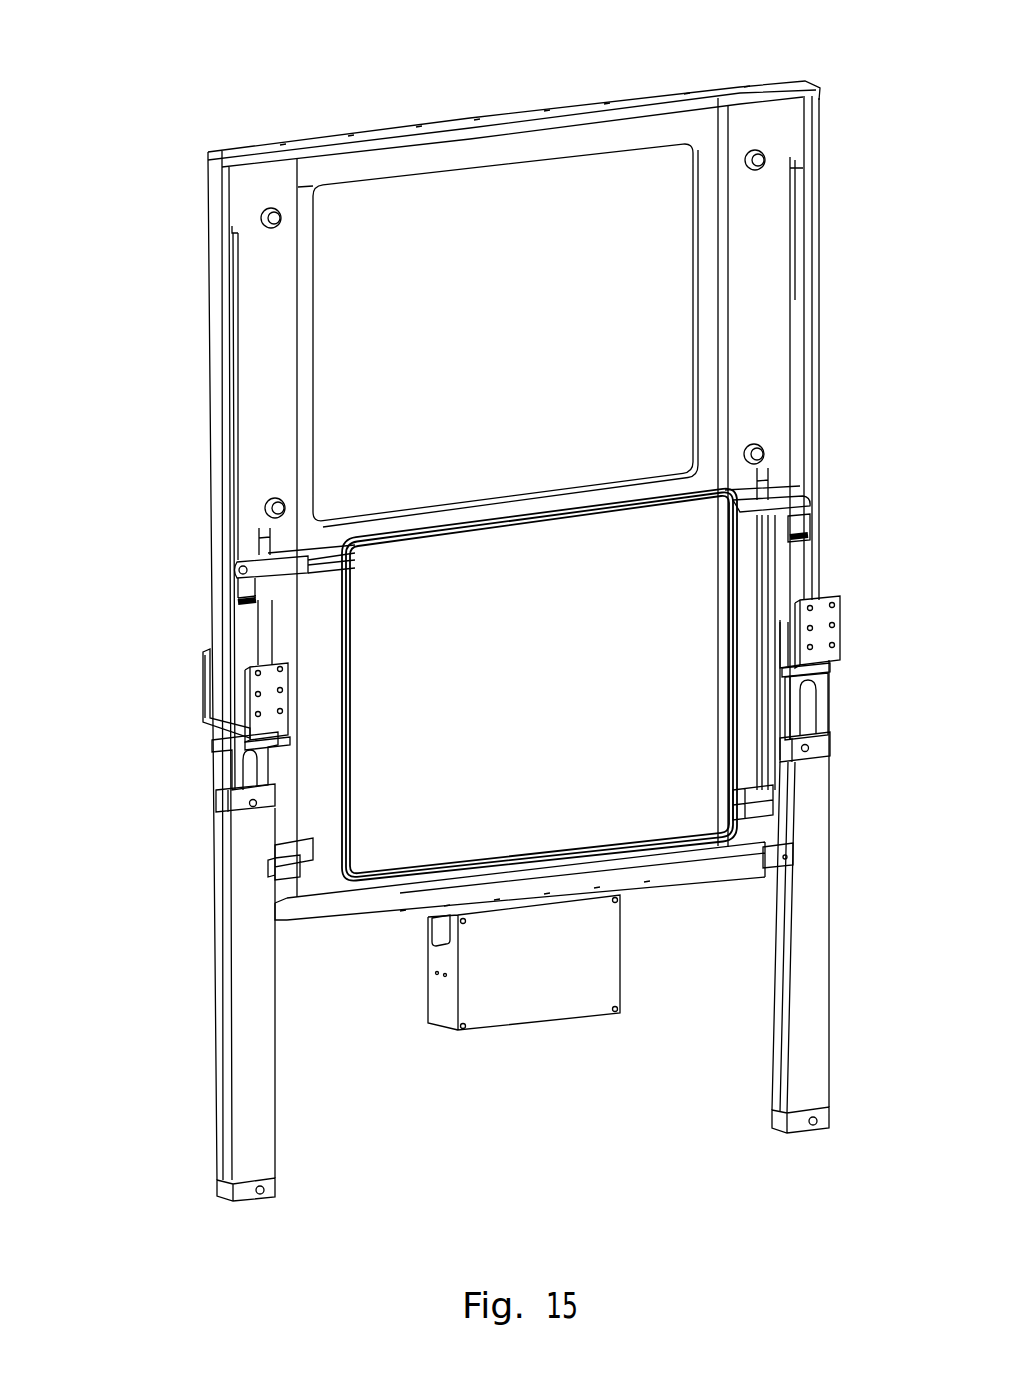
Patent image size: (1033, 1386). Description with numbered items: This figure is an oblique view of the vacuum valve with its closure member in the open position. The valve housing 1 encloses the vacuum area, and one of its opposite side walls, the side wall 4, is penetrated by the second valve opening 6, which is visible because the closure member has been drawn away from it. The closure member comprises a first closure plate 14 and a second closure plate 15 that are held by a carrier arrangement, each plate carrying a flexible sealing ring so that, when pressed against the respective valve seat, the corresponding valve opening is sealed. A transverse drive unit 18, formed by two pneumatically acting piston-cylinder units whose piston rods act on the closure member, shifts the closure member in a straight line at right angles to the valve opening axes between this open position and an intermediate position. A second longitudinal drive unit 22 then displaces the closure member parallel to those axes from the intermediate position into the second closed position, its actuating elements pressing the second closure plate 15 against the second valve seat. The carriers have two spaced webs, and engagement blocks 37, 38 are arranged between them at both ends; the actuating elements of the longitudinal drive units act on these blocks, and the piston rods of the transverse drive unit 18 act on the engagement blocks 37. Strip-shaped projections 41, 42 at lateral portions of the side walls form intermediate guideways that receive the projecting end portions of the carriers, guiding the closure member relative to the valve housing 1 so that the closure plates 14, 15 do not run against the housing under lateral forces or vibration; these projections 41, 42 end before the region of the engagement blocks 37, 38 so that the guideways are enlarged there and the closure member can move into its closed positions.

The valve housing 1 is at (529, 103).
The side wall 4 is at (706, 125).
The second valve opening 6 is at (653, 243).
The first closure plate 14 is at (790, 858).
The second closure plate 15 is at (660, 508).
The transverse drive unit 18 is at (763, 980).
The second longitudinal drive unit 22 is at (740, 452).
The engagement block 37 is at (247, 563).
The engagement block 38 is at (290, 857).
The strip-shaped projection 41 is at (800, 180).
The strip-shaped projection 42 is at (258, 540).